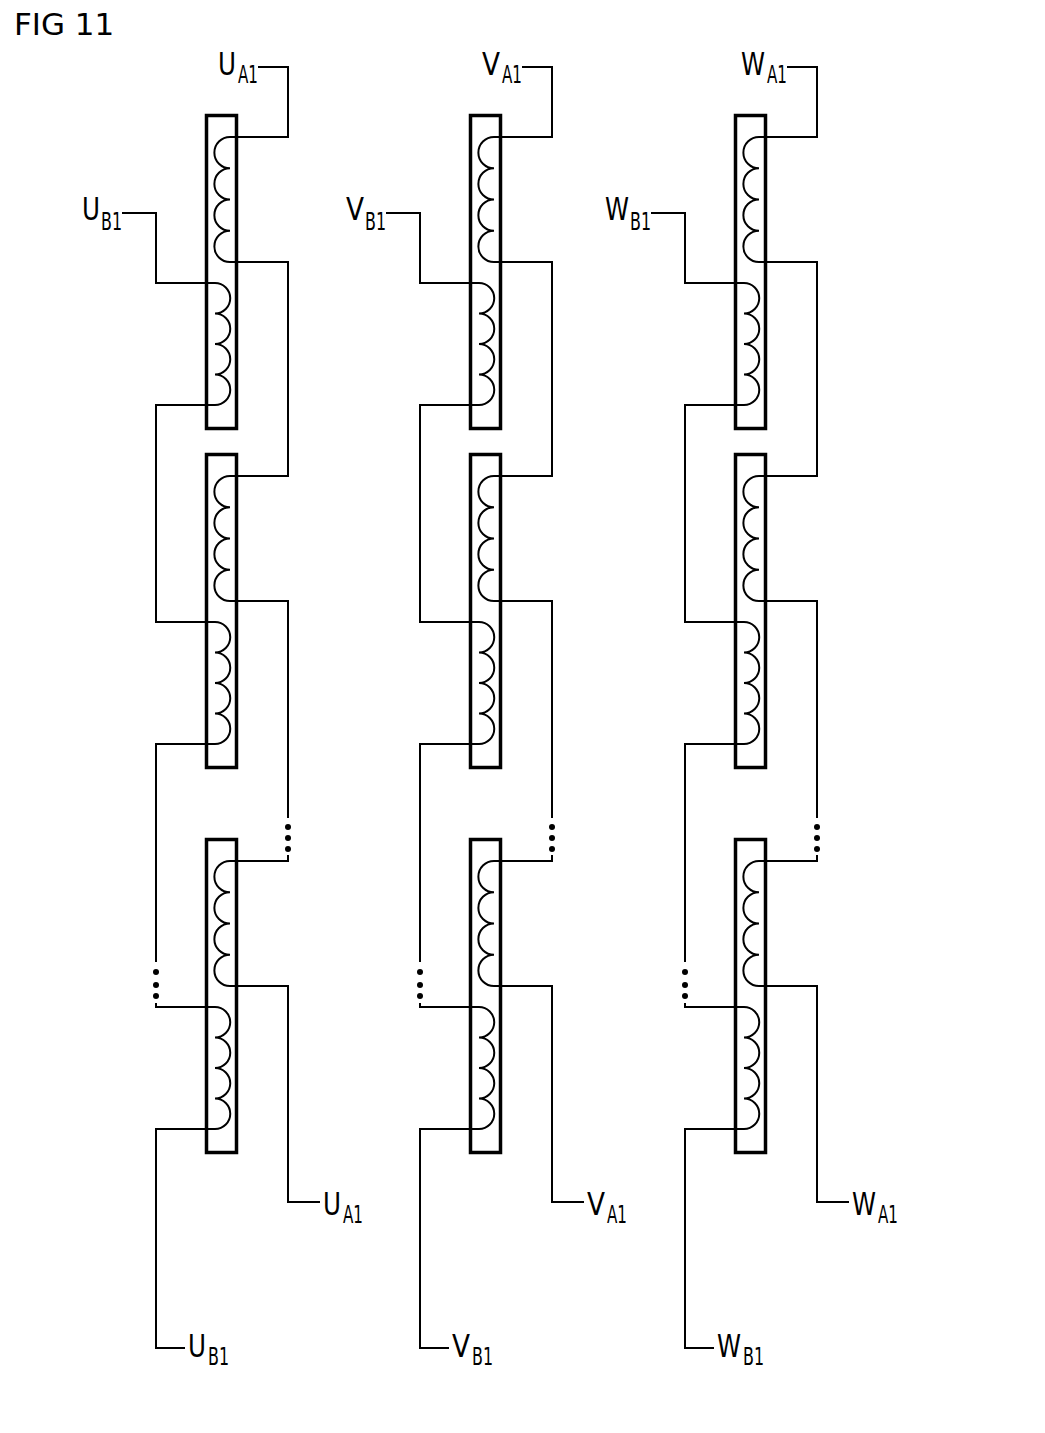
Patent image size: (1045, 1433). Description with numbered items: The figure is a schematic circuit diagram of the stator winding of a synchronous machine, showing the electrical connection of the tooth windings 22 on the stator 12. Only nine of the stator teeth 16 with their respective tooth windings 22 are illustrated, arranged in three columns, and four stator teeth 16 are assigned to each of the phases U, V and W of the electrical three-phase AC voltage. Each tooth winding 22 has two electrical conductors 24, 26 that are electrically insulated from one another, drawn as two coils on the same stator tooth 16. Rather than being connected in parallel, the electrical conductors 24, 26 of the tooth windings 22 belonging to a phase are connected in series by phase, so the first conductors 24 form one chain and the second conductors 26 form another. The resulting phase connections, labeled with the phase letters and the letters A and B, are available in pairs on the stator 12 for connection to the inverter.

The stator 12 is at (868, 54).
The stator tooth 16 is at (238, 199).
The tooth winding 22 is at (284, 163).
The electrical conductor 24 is at (214, 152).
The electrical conductor 26 is at (230, 387).